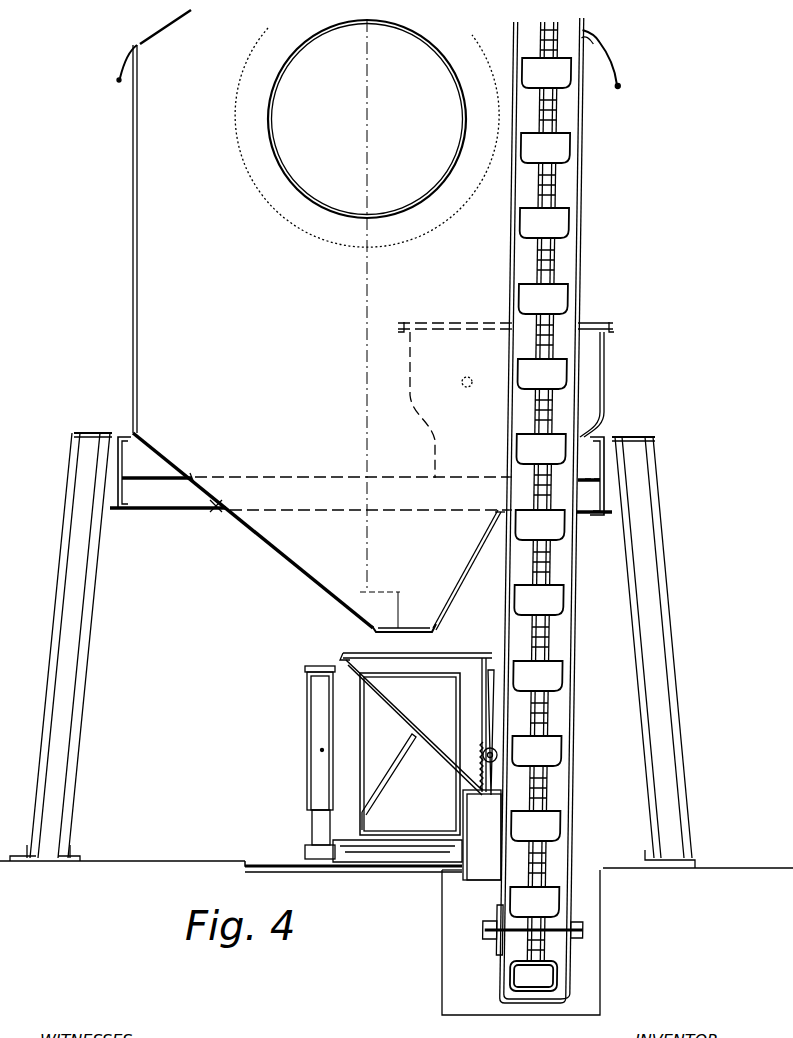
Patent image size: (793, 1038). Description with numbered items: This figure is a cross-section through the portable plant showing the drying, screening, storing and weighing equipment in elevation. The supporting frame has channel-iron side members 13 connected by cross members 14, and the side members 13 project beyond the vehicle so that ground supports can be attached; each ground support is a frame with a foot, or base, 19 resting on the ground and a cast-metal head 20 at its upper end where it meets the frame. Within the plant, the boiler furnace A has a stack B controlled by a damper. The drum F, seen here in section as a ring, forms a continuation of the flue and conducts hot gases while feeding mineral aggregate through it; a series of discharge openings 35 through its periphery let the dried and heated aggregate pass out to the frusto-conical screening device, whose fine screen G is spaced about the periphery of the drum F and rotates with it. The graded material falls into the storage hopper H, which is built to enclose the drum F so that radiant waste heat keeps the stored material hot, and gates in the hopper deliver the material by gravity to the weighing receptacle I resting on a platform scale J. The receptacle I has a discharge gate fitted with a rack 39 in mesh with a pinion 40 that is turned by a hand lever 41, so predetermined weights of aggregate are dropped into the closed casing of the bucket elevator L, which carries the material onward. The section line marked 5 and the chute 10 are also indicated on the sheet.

The bucket elevator 5 is at (563, 1022).
The feed chute 10 is at (511, 400).
The side member 13 is at (125, 477).
The cross member 14 is at (180, 497).
The foot 19 is at (70, 853).
The head 20 is at (78, 444).
The discharge opening 35 is at (367, 23).
The rack 39 is at (482, 752).
The pinion 40 is at (493, 782).
The hand lever 41 is at (488, 710).
The boiler furnace A is at (375, 471).
The stack B is at (392, 602).
The drum F is at (460, 152).
The fine screen G is at (410, 233).
The storage hopper H is at (337, 389).
The weighing receptacle I is at (416, 744).
The platform scale J is at (397, 853).
The elevator L is at (537, 526).